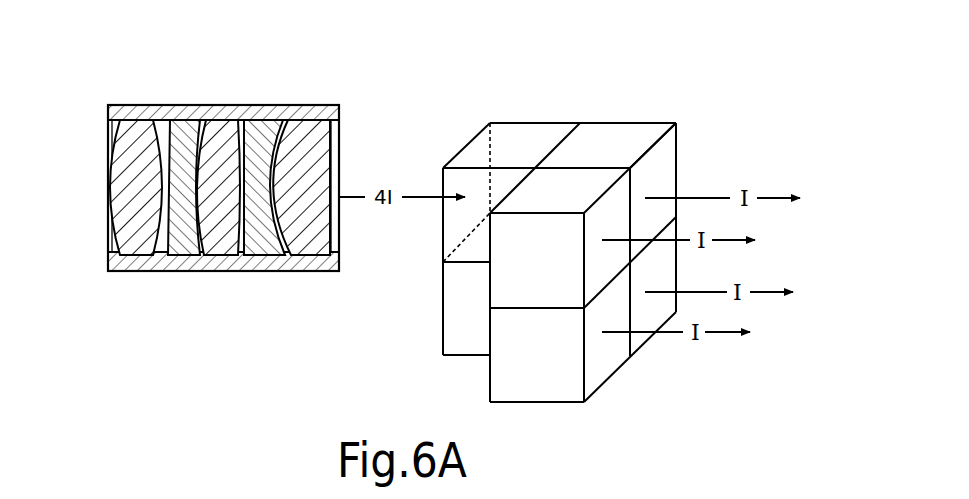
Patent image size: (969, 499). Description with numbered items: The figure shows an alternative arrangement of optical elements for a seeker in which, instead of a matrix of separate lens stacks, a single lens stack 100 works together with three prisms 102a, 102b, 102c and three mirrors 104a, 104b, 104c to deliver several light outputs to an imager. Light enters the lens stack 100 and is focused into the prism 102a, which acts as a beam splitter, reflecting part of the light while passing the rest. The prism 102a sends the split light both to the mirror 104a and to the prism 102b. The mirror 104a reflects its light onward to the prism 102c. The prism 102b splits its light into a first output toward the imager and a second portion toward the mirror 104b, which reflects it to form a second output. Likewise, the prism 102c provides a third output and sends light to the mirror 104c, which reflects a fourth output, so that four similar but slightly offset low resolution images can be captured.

The lens stack 100 is at (93, 154).
The prism 102a is at (522, 133).
The prism 102b is at (628, 142).
The prism 102c is at (662, 273).
The mirror 104a is at (442, 323).
The mirror 104b is at (555, 190).
The mirror 104c is at (598, 357).